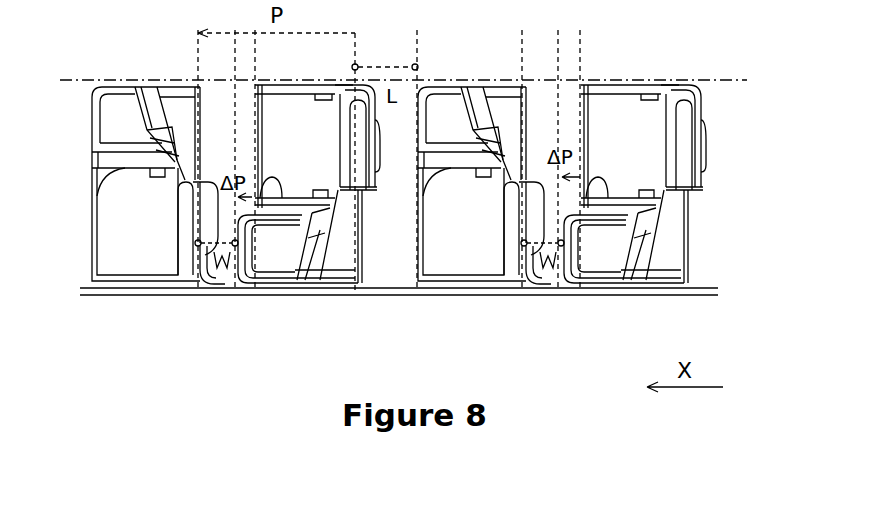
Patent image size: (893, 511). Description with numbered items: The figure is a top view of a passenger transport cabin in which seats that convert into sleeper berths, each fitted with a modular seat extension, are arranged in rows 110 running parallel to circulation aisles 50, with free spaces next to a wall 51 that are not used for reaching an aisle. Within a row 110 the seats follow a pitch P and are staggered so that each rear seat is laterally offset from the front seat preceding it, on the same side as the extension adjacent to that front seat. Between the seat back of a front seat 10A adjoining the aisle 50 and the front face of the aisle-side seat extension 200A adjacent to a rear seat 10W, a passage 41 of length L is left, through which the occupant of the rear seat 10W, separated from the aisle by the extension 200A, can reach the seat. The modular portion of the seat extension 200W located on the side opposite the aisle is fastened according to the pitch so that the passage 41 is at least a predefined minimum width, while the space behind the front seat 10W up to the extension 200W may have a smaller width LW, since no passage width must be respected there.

The circulation aisle 50 is at (141, 49).
The wall 51 is at (703, 272).
The rear seat 10W is at (127, 263).
The front seat 10A is at (310, 83).
The seat extension 200W is at (288, 268).
The seat extension 200A is at (452, 103).
The row 110 is at (703, 180).
The passage 41 is at (411, 162).